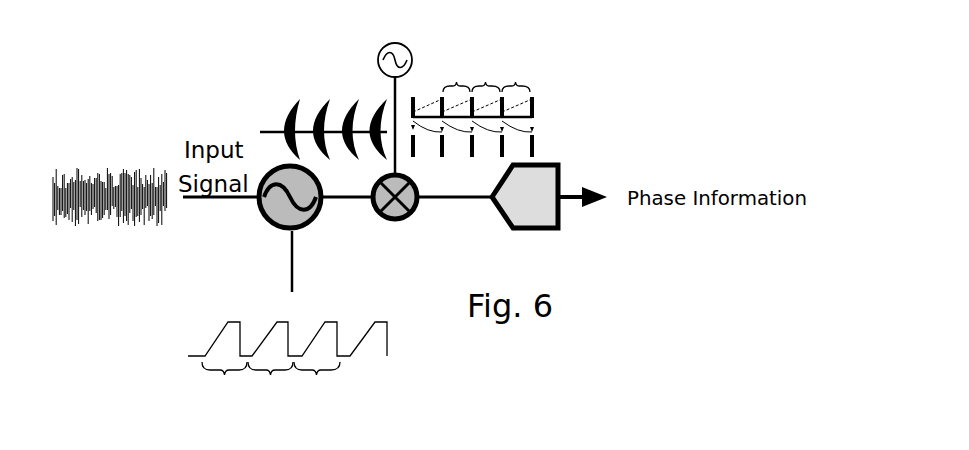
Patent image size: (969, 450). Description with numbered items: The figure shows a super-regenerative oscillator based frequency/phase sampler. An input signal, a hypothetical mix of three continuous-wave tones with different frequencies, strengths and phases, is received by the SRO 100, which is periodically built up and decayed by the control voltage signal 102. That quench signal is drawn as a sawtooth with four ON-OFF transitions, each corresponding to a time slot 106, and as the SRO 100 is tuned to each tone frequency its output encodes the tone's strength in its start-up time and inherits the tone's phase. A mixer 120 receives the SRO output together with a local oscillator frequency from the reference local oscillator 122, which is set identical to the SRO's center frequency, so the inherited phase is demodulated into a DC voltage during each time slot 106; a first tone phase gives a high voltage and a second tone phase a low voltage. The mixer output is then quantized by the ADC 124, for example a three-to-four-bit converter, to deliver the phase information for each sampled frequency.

The super-regenerative oscillator (SRO) 100 is at (298, 238).
The Vctrl signal 102 is at (292, 263).
The time slot 106 is at (373, 234).
The mixer 120 is at (398, 228).
The reference local oscillator 122 is at (378, 62).
The analog to digital converter (ADC) 124 is at (533, 228).